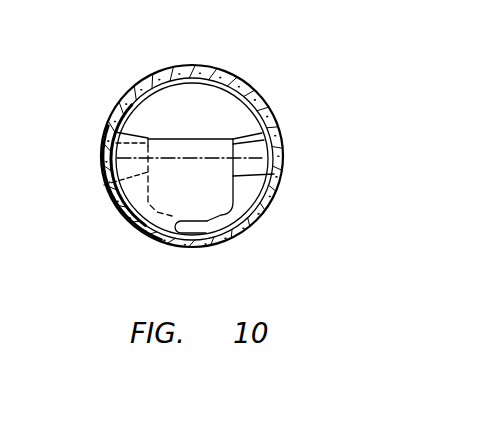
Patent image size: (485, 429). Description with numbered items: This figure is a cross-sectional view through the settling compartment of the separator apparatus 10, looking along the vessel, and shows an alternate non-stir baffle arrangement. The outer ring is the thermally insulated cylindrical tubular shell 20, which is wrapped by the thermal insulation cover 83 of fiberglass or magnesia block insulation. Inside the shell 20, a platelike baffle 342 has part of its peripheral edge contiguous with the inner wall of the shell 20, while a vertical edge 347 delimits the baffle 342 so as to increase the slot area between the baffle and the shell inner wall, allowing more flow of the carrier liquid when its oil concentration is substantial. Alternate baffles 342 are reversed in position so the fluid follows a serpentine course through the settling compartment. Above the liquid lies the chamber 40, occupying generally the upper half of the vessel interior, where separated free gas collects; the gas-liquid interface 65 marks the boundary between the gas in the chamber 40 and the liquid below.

The separator apparatus 10 is at (170, 58).
The cylindrical tubular shell 20 is at (126, 107).
The thermal insulation cover 83 is at (266, 112).
The chamber 40 is at (203, 109).
The gas-liquid interface 65 is at (193, 158).
The baffle 342 is at (207, 197).
The vertical edge 347 is at (101, 188).